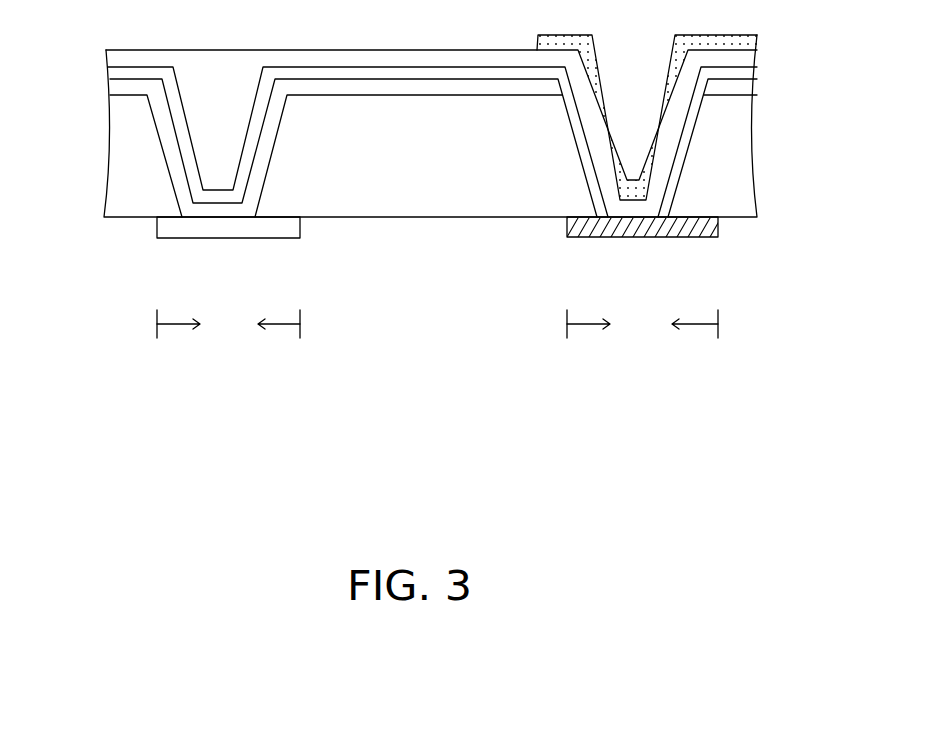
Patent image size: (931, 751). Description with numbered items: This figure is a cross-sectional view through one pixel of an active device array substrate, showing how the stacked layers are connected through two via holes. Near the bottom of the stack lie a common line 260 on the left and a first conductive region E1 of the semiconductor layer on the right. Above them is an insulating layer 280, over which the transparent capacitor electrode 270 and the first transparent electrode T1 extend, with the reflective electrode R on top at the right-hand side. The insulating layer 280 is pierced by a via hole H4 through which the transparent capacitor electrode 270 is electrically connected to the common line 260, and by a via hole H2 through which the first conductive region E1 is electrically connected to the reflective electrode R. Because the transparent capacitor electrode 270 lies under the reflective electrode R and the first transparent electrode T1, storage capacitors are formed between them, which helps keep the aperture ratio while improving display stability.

The first transparent electrode T1 is at (117, 58).
The transparent capacitor electrode 270 is at (120, 87).
The insulating layer 280 is at (745, 72).
The reflective electrode R is at (742, 36).
The common line 260 is at (227, 228).
The first conductive region E1 is at (645, 227).
The via hole H4 is at (228, 323).
The via hole H2 is at (642, 323).